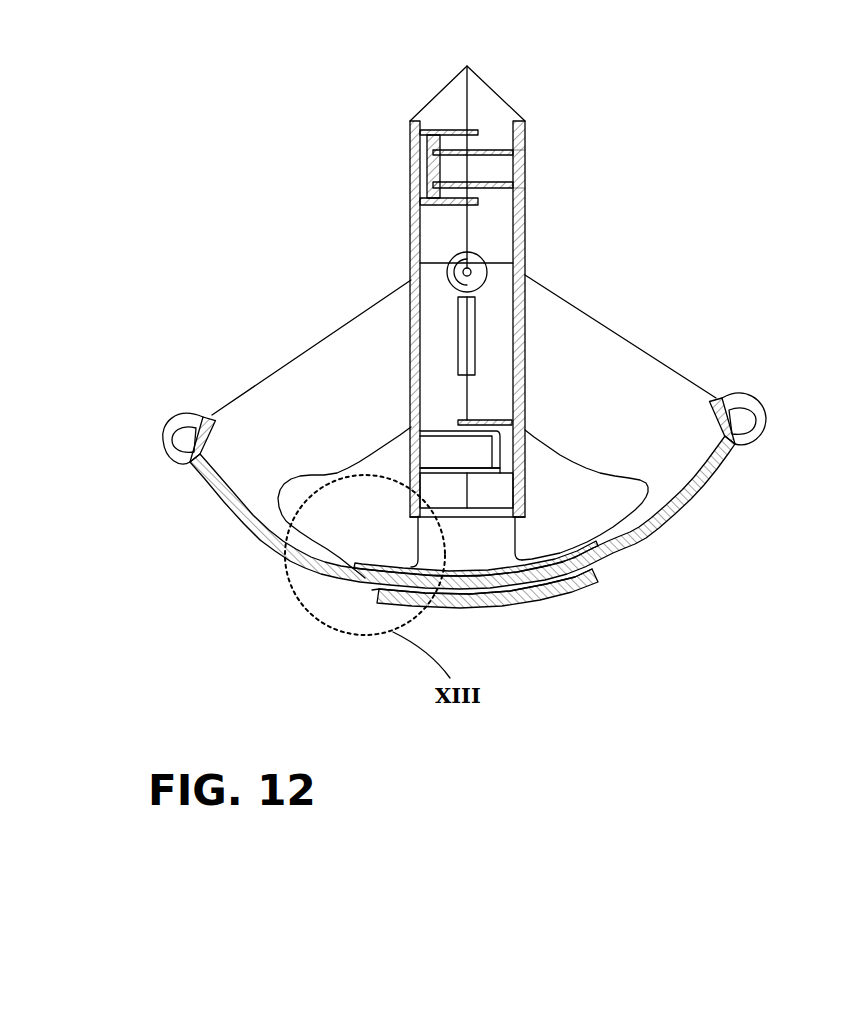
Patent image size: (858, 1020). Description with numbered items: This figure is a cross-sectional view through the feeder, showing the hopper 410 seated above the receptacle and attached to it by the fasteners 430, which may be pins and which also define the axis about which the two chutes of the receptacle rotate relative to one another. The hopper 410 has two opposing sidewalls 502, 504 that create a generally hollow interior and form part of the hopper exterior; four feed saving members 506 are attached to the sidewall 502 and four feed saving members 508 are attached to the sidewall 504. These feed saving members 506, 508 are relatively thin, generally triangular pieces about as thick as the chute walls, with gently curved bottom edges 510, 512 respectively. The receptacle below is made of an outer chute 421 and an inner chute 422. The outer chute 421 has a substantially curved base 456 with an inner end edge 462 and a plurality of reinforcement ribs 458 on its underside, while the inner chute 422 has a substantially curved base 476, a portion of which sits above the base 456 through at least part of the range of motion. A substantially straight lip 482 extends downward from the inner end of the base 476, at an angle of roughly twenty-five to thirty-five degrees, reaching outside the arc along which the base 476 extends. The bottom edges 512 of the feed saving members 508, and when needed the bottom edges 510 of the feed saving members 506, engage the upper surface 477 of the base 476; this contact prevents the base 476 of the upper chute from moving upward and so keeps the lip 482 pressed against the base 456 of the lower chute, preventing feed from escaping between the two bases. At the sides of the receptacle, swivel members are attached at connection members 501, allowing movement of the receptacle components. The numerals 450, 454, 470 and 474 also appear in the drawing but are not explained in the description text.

The hopper 410 is at (525, 253).
The sidewall 502 is at (523, 160).
The sidewall 504 is at (410, 185).
The fastener 430 is at (472, 266).
The feed saving member 508 is at (355, 462).
The left cord 450 is at (362, 343).
The right cord 470 is at (558, 343).
The feed saving member 506 is at (572, 488).
The outer chute 421 is at (250, 532).
The inner chute 422 is at (650, 535).
The left end bar 454 is at (207, 413).
The upper surface 477 is at (717, 397).
The connection member 501 is at (168, 428).
The right eyelet mount 474 is at (752, 398).
The base 456 is at (213, 493).
The base 476 is at (698, 480).
The bottom edge 512 is at (285, 566).
The bottom edge 510 is at (597, 575).
The reinforcement rib 458 is at (483, 607).
The inner end edge 462 is at (590, 606).
The lip 482 is at (360, 575).